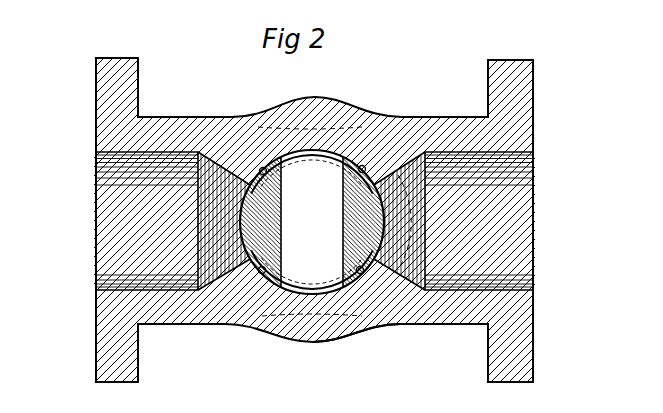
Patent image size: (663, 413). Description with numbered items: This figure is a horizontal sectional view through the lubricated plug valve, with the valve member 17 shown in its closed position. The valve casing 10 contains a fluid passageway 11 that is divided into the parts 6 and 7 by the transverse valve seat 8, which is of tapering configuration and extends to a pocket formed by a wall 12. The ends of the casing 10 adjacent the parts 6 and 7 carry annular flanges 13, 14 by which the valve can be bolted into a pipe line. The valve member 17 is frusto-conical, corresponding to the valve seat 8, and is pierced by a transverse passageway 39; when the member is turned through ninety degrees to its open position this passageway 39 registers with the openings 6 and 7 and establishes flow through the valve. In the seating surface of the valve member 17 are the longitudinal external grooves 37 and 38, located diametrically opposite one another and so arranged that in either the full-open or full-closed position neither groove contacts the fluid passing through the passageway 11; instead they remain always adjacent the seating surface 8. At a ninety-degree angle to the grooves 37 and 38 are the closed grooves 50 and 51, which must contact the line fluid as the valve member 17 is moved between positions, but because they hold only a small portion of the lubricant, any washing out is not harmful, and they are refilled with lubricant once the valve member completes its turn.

The passageway part 6 is at (104, 200).
The passageway part 7 is at (518, 220).
The valve seat 8 is at (364, 166).
The valve casing 10 is at (321, 341).
The fluid passageway 11 is at (178, 228).
The wall 12 is at (366, 302).
The annular flange 13 is at (112, 62).
The annular flange 14 is at (515, 66).
The valve member 17 is at (380, 222).
The longitudinal external groove 37 is at (262, 274).
The longitudinal external groove 38 is at (408, 124).
The transverse passageway 39 is at (297, 186).
The closed groove 50 is at (240, 178).
The closed groove 51 is at (395, 271).